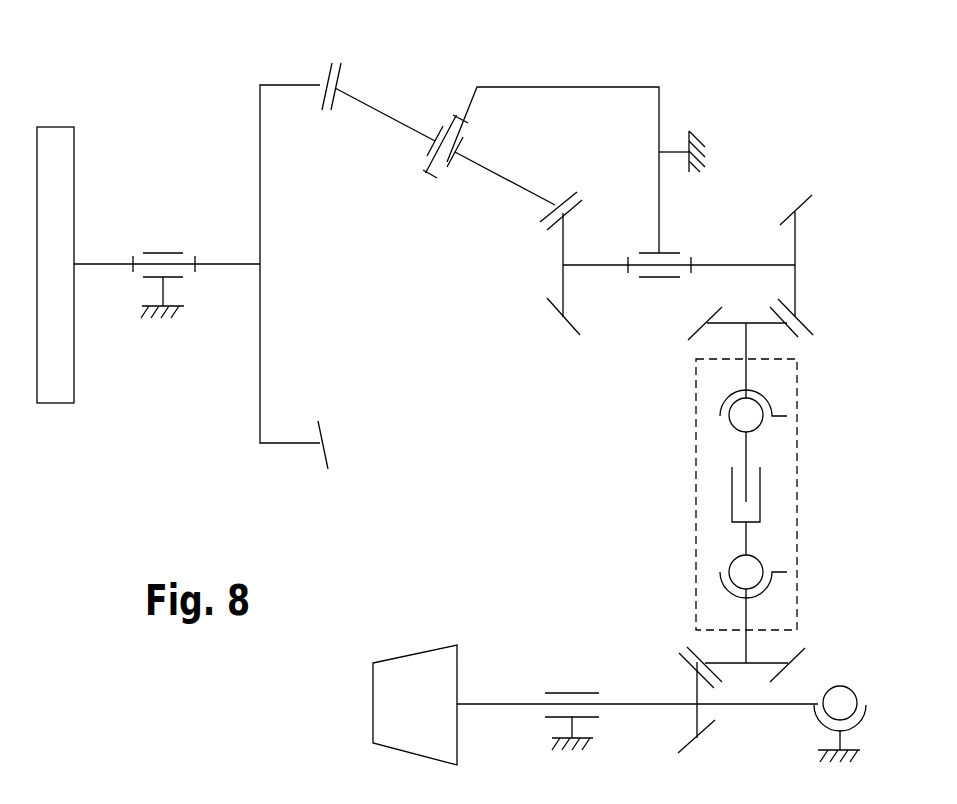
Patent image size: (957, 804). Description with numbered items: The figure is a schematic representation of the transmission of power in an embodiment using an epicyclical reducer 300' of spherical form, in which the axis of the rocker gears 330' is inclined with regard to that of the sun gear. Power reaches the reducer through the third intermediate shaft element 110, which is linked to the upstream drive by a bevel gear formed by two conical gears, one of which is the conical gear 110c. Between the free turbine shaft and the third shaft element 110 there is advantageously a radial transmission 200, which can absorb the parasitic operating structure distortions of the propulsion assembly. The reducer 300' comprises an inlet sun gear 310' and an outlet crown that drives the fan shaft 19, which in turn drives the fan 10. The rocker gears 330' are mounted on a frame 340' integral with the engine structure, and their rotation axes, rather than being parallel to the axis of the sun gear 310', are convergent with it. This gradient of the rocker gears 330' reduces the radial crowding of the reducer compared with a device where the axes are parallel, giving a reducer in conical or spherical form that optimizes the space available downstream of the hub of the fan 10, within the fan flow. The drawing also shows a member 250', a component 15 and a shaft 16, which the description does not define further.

The fan 10 is at (74, 153).
The fan shaft 19 is at (100, 264).
The reducer 300' is at (436, 243).
The first transmission member 250' is at (254, 266).
The rocker gears 330' is at (455, 159).
The frame 340' is at (576, 135).
The inlet sun gear 310' is at (521, 274).
The third intermediate shaft element 110 is at (723, 265).
The conical gear 110c is at (795, 245).
The radial transmission 200 is at (696, 437).
The propeller / fan 15 is at (428, 647).
The output shaft 16 is at (650, 704).